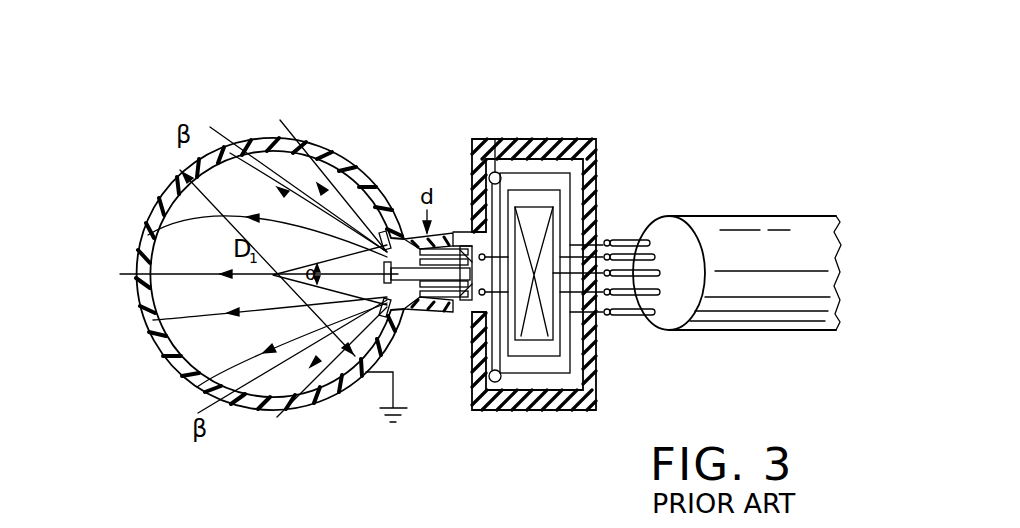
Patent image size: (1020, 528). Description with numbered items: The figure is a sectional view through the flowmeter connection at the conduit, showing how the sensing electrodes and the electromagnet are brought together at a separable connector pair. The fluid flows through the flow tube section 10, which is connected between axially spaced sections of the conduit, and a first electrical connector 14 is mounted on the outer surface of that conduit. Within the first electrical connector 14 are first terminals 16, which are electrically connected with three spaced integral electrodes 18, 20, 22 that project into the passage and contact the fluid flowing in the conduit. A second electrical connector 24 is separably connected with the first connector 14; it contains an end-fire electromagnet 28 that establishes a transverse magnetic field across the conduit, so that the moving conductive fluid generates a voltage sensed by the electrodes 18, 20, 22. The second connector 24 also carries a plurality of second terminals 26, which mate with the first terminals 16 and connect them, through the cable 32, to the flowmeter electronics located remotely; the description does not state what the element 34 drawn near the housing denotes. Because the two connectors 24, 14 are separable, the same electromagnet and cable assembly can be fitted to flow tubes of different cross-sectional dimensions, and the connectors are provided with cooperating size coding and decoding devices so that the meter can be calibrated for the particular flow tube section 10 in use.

The flow tube section 10 is at (135, 238).
The first electrical connector 14 is at (462, 312).
The first terminals 16 is at (408, 233).
The integral electrode 18 is at (383, 233).
The integral electrode 20 is at (404, 393).
The integral electrode 22 is at (357, 274).
The second electrical connector 24 is at (596, 170).
The second terminals 26 is at (442, 233).
The end-fire electromagnet 28 is at (537, 340).
The cable 32 is at (735, 325).
The shield wire 34 is at (495, 140).